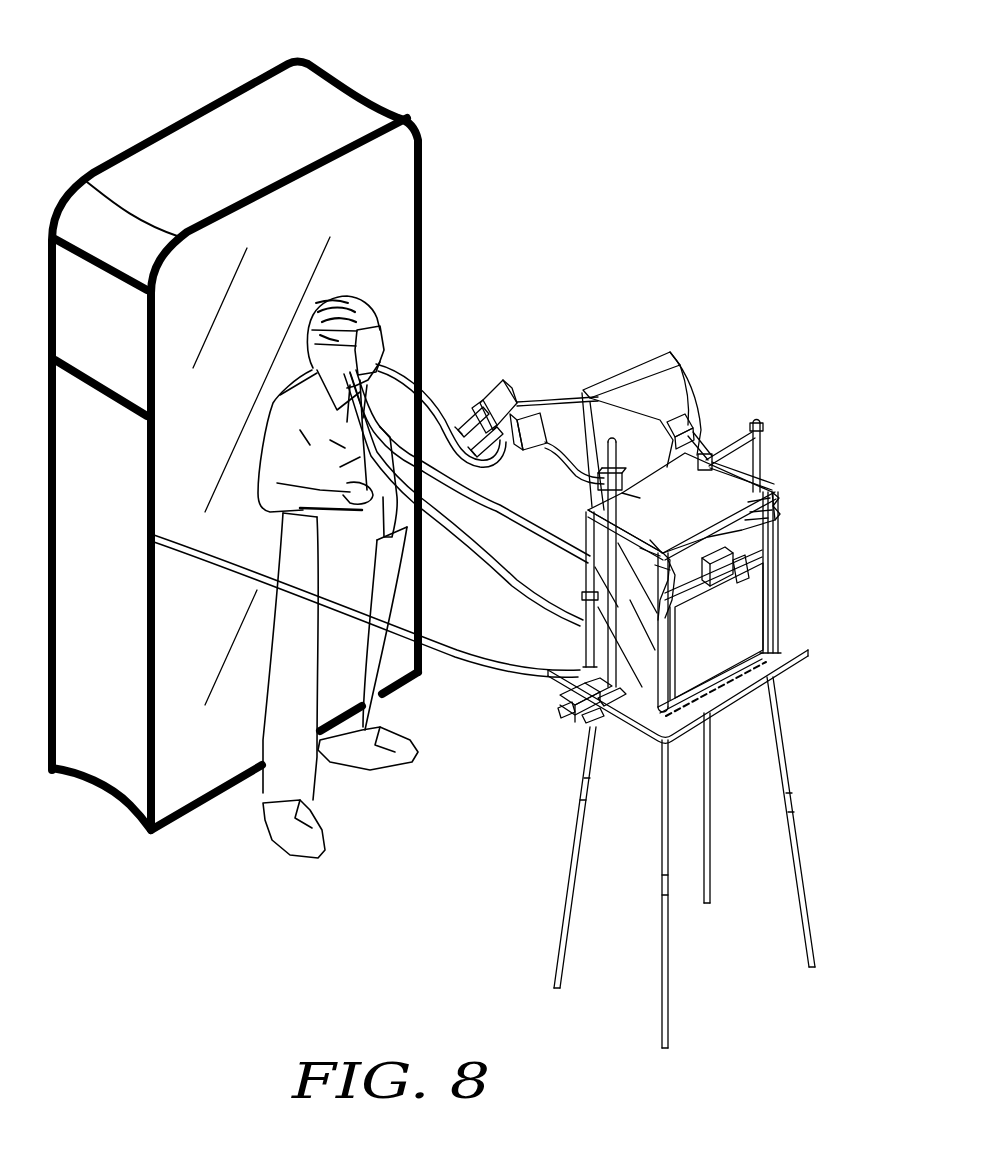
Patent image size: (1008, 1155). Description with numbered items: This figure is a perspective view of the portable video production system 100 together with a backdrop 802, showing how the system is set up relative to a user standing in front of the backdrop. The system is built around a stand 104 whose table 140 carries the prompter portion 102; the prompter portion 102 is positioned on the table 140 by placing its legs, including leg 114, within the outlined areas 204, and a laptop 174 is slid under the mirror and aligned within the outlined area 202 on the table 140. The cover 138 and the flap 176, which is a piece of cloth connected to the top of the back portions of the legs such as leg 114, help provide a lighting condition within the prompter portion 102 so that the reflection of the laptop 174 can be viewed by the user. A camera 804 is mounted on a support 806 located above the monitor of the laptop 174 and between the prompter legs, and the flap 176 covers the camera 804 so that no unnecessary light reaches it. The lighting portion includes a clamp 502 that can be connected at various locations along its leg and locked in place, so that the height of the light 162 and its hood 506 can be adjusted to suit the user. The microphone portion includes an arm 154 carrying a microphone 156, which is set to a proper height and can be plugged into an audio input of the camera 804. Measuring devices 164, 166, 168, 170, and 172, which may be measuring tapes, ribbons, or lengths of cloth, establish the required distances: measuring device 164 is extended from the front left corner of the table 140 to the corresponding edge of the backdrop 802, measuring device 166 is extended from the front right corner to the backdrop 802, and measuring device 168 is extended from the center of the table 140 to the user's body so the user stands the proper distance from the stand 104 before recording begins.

The portable video production system 100 is at (703, 61).
The prompter portion 102 is at (790, 345).
The stand 104 is at (815, 633).
The leg 114 is at (773, 590).
The cover 138 is at (682, 531).
The table 140 is at (560, 685).
The arm 154 is at (573, 460).
The microphone 156 is at (500, 384).
The light 162 is at (690, 425).
The measuring device 164 is at (523, 523).
The measuring device 166 is at (457, 657).
The measuring device 168 is at (517, 584).
The measuring device 170 is at (432, 437).
The measuring device 172 is at (553, 400).
The laptop 174 is at (730, 654).
The flap 176 is at (776, 513).
The outlined area 202 is at (737, 673).
The outlined areas 204 is at (785, 647).
The clamp 502 is at (762, 432).
The hood 506 is at (674, 376).
The backdrop 802 is at (411, 83).
The camera 804 is at (735, 560).
The support 806 is at (767, 568).